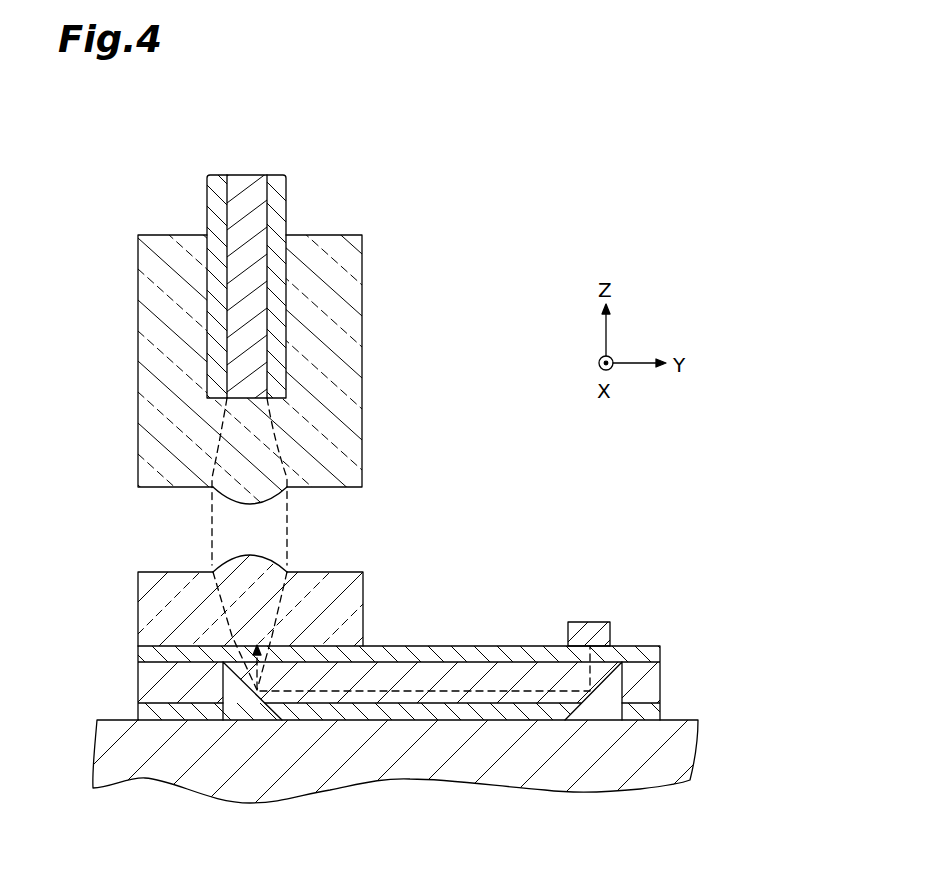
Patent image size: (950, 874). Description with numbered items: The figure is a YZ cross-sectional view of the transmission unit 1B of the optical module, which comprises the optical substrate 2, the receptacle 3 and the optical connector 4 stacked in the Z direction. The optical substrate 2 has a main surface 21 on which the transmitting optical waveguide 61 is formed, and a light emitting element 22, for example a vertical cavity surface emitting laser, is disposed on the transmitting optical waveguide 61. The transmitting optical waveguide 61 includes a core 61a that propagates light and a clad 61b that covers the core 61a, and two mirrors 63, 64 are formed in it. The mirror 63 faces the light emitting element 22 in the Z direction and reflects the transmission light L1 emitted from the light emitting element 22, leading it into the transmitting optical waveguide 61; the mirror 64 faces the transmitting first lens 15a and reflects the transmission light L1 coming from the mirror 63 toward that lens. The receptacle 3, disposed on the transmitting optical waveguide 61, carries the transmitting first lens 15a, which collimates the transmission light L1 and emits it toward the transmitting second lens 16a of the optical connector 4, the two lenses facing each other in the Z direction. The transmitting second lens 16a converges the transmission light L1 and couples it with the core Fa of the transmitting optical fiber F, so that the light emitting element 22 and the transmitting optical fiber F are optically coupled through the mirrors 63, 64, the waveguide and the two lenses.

The transmission unit 1B is at (504, 140).
The transmitting optical fiber F is at (241, 269).
The core Fa is at (247, 198).
The optical connector 4 is at (254, 385).
The transmitting second lens 16a is at (230, 496).
The receptacle 3 is at (237, 592).
The transmitting first lens 15a is at (235, 560).
The transmission light L1 is at (290, 522).
The optical substrate 2 is at (405, 690).
The transmitting optical waveguide 61 is at (397, 629).
The core 61a is at (570, 575).
The clad 61b is at (513, 710).
The light emitting element 22 is at (588, 632).
The main surface 21 is at (462, 763).
The mirror 63 is at (585, 698).
The mirror 64 is at (261, 700).